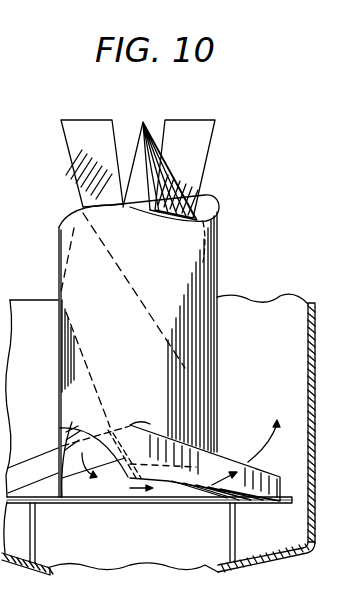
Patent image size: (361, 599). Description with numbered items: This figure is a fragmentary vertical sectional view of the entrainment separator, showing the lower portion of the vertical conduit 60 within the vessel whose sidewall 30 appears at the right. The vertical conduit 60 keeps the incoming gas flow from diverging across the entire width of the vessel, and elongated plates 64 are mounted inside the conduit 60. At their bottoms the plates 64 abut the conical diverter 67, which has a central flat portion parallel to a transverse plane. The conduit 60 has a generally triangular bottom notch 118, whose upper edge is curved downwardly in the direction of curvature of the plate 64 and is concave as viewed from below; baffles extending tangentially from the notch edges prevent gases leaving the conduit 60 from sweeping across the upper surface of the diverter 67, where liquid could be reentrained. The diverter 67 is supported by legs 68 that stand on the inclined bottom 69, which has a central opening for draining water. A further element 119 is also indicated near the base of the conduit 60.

The sidewall 30 is at (315, 368).
The vertical conduit 60 is at (217, 221).
The elongated plates 64 is at (97, 148).
The conical diverter 67 is at (110, 489).
The legs 68 is at (37, 538).
The inclined bottom 69 is at (258, 566).
The generally triangular bottom notch 118 is at (85, 425).
The ramp flap 119 is at (58, 438).